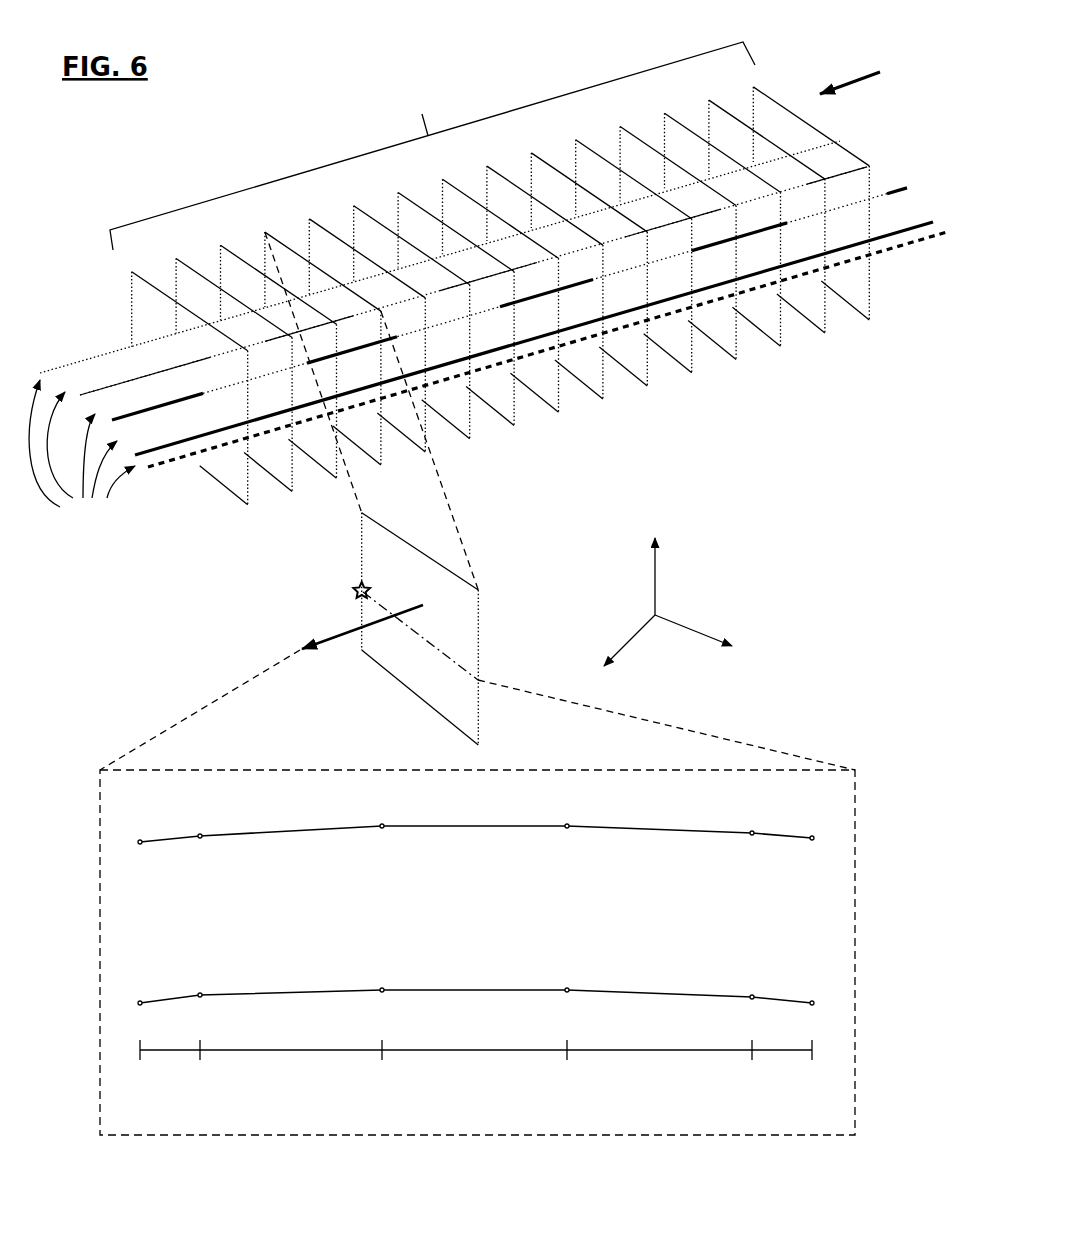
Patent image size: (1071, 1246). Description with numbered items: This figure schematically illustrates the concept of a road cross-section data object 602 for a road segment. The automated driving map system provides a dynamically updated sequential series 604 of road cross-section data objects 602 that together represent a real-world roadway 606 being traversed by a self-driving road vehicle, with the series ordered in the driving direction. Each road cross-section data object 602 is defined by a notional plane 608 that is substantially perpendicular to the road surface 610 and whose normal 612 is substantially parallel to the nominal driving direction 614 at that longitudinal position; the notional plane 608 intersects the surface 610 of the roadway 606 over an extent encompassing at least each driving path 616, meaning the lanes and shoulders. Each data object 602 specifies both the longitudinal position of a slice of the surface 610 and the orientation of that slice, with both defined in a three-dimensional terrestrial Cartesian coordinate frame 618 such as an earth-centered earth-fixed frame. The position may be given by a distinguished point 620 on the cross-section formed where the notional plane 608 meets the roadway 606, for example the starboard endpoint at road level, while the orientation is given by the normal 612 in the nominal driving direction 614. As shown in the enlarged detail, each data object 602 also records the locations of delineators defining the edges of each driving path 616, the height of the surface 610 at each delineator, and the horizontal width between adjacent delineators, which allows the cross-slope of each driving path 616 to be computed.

The road cross-section data object 602 is at (580, 768).
The sequential series of road cross-section data objects 604 is at (432, 146).
The real-world roadway 606 is at (108, 345).
The notional plane 608 is at (313, 462).
The road surface 610 is at (413, 655).
The normal of the notional plane 612 is at (340, 636).
The nominal driving direction 614 is at (848, 82).
The driving path 616 is at (82, 452).
The Cartesian coordinate frame 618 is at (645, 602).
The distinguished point 620 is at (352, 589).